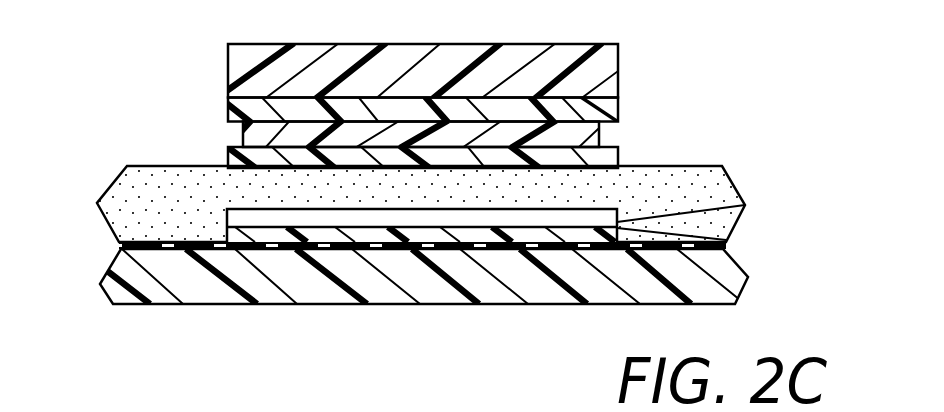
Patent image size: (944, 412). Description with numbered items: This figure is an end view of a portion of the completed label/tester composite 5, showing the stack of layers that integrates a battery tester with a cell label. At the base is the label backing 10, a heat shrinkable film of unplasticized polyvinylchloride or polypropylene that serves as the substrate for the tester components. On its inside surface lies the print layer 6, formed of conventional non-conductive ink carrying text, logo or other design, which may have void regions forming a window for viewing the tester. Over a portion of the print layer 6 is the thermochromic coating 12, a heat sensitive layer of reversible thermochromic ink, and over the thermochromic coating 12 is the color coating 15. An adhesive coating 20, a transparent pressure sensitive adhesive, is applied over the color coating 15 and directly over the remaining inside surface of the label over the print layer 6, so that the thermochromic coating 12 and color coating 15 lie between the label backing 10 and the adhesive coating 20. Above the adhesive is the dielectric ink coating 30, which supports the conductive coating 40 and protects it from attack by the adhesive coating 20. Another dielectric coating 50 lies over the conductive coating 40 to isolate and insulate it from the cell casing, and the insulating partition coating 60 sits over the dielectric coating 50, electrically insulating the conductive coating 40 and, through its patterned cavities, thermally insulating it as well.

The label/tester composite 5 is at (427, 191).
The print layer 6 is at (120, 246).
The label backing 10 is at (744, 285).
The thermochromic coating 12 is at (725, 235).
The color coating 15 is at (745, 205).
The adhesive coating 20 is at (112, 184).
The dielectric ink coating 30 is at (227, 158).
The conductive coating 40 is at (243, 136).
The dielectric coating 50 is at (228, 110).
The insulating partition coating 60 is at (228, 80).